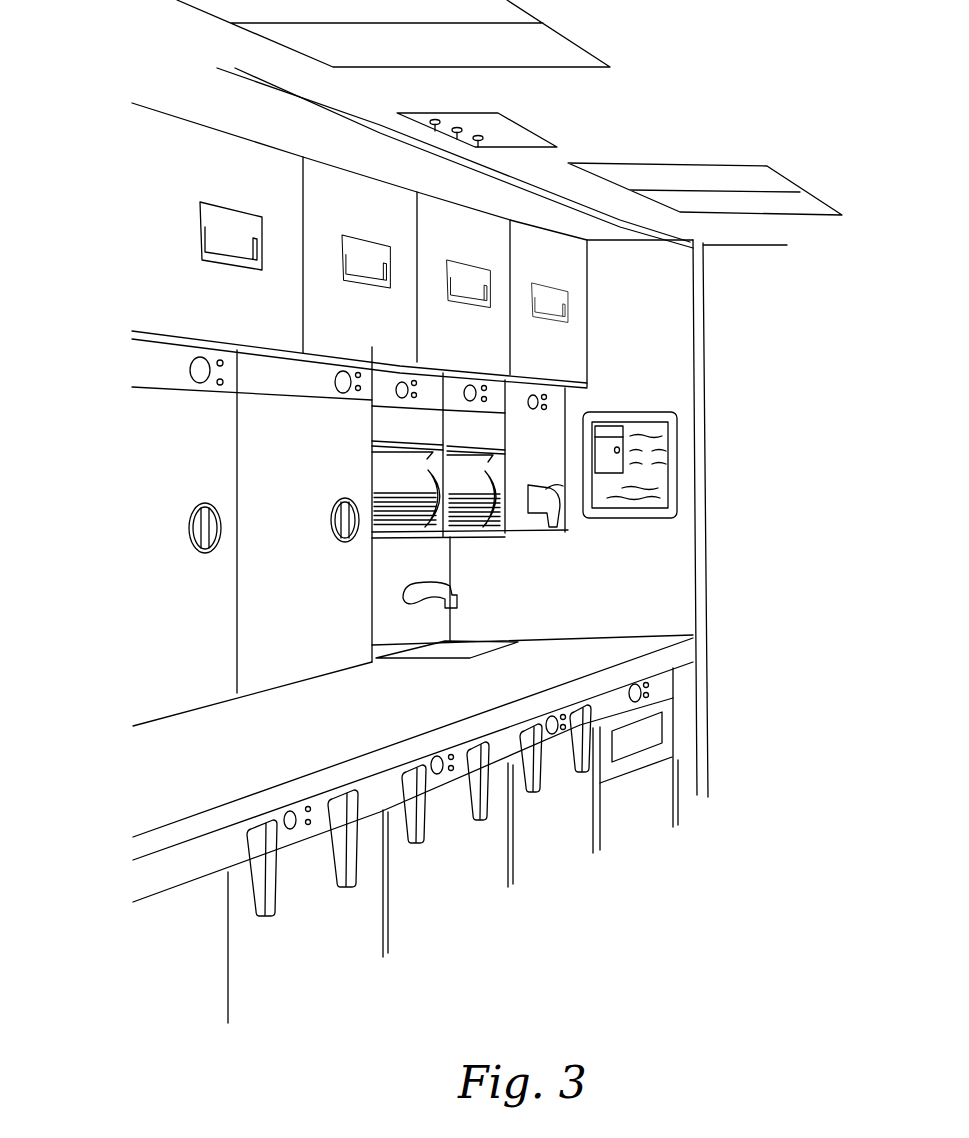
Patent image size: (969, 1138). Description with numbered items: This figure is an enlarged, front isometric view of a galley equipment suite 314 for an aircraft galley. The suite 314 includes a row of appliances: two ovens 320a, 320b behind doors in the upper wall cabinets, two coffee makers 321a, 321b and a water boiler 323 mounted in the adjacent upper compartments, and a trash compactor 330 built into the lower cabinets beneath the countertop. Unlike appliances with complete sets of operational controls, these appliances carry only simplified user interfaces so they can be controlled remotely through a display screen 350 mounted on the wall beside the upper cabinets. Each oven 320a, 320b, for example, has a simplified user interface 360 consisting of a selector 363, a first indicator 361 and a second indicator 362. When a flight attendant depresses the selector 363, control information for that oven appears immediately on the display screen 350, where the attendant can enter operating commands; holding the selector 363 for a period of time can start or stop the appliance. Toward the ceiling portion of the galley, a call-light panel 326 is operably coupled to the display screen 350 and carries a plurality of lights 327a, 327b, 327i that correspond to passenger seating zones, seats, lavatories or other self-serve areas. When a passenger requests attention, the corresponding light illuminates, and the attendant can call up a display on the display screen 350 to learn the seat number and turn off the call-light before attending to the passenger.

The galley equipment suite 314 is at (167, 171).
The call-light panel 326 is at (537, 142).
The light 327a is at (433, 124).
The light 327b is at (456, 140).
The light 327i is at (478, 148).
The simplified user interface 360 is at (203, 395).
The first indicator 361 is at (224, 364).
The second indicator 362 is at (223, 383).
The selector 363 is at (190, 371).
The oven 320a is at (204, 609).
The oven 320b is at (336, 593).
The coffee maker 321a is at (433, 437).
The coffee maker 321b is at (498, 438).
The water boiler 323 is at (554, 462).
The display screen 350 is at (657, 412).
The trash compactor 330 is at (641, 810).